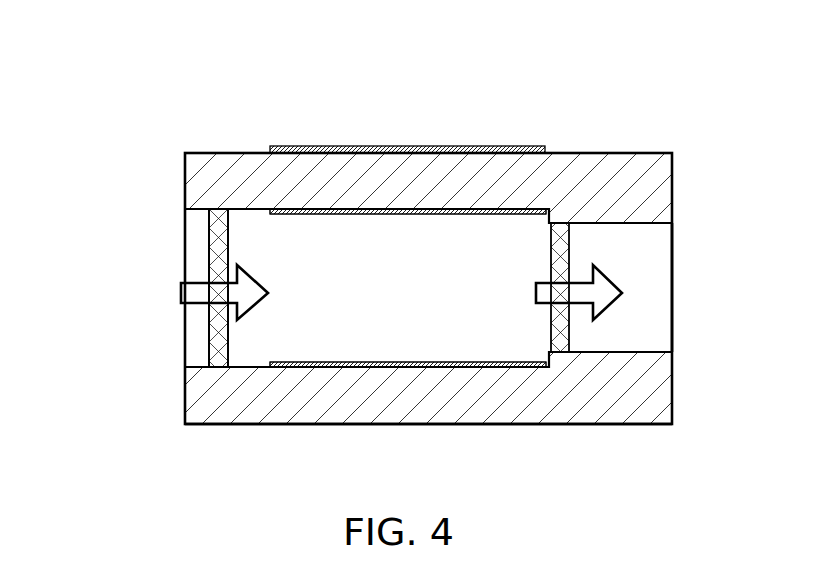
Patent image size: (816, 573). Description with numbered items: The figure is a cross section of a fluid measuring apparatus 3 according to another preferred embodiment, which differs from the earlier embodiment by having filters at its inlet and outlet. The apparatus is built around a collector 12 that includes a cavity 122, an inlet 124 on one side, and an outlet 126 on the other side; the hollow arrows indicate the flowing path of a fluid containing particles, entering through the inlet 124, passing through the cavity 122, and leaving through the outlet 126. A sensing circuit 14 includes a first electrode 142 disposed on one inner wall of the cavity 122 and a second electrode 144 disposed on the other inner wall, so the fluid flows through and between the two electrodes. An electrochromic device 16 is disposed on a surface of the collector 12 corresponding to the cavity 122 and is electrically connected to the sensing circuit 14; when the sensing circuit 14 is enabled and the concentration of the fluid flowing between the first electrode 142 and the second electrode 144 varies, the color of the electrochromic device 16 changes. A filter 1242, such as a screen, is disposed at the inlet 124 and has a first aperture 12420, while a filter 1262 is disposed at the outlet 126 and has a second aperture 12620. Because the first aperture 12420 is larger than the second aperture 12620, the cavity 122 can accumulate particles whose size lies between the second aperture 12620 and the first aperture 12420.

The fluid measuring apparatus 3 is at (722, 85).
The collector 12 is at (250, 162).
The cavity 122 is at (320, 330).
The inlet 124 is at (205, 262).
The filter 1242 is at (215, 325).
The first aperture 12420 is at (205, 318).
The outlet 126 is at (583, 245).
The filter 1262 is at (553, 223).
The second aperture 12620 is at (580, 343).
The sensing circuit 14 is at (485, 258).
The first electrode 142 is at (427, 214).
The second electrode 144 is at (422, 365).
The electrochromic device 16 is at (332, 150).